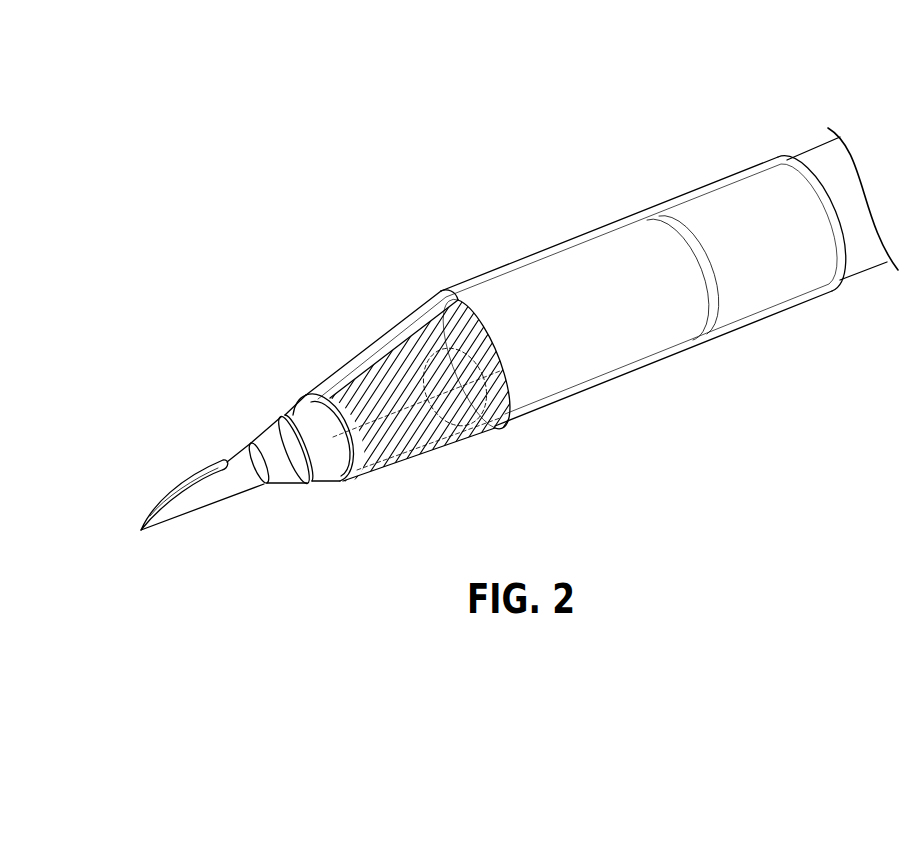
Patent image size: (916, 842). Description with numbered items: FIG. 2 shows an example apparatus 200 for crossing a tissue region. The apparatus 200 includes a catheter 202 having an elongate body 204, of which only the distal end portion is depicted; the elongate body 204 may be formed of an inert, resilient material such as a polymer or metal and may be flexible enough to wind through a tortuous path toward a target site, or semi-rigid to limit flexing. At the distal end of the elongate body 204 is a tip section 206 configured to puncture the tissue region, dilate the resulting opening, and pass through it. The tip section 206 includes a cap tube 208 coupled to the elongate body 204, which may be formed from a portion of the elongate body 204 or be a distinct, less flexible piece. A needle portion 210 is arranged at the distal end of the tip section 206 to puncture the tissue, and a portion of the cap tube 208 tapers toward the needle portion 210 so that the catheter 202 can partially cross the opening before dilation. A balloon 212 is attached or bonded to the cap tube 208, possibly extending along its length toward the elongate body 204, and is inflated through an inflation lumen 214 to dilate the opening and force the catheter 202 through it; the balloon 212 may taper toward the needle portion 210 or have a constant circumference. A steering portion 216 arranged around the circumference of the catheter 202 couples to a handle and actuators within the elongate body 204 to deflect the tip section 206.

The apparatus 200 is at (238, 202).
The catheter 202 is at (870, 278).
The elongate body 204 is at (813, 157).
The tip section 206 is at (513, 255).
The cap tube 208 is at (573, 350).
The needle portion 210 is at (215, 463).
The balloon 212 is at (437, 297).
The inflation lumen 214 is at (372, 367).
The steering portion 216 is at (659, 216).